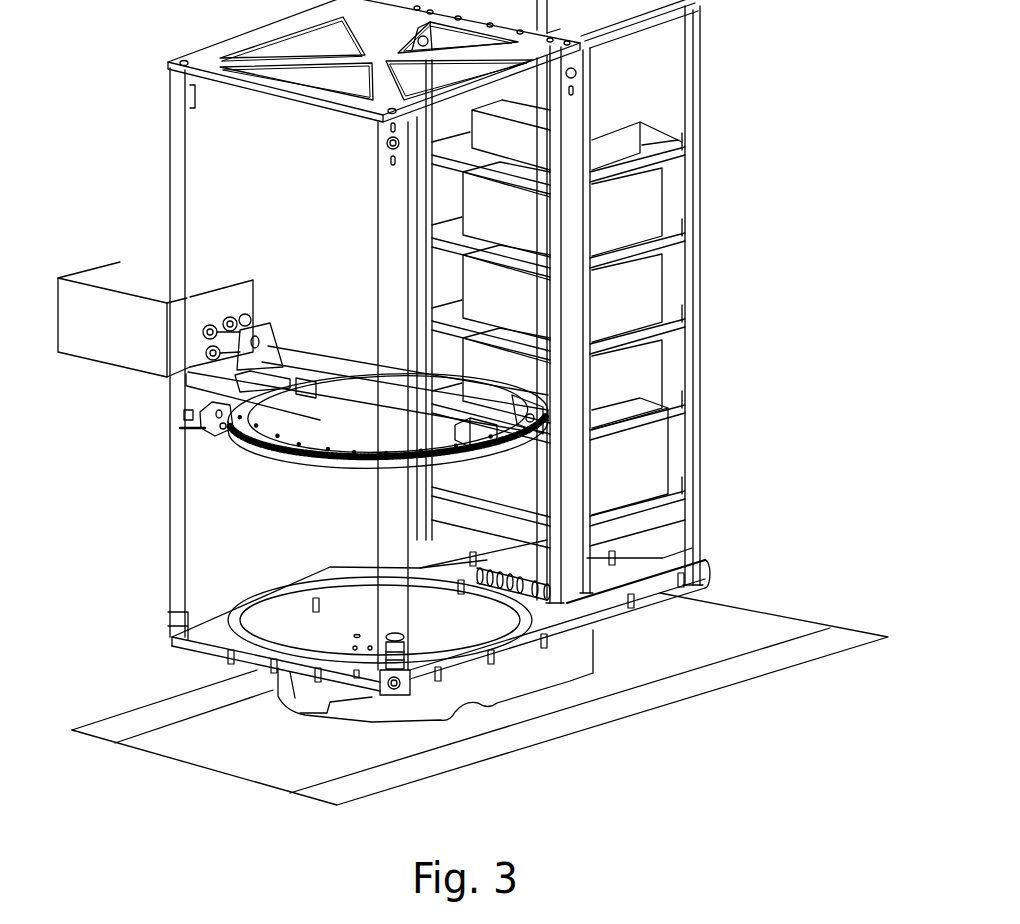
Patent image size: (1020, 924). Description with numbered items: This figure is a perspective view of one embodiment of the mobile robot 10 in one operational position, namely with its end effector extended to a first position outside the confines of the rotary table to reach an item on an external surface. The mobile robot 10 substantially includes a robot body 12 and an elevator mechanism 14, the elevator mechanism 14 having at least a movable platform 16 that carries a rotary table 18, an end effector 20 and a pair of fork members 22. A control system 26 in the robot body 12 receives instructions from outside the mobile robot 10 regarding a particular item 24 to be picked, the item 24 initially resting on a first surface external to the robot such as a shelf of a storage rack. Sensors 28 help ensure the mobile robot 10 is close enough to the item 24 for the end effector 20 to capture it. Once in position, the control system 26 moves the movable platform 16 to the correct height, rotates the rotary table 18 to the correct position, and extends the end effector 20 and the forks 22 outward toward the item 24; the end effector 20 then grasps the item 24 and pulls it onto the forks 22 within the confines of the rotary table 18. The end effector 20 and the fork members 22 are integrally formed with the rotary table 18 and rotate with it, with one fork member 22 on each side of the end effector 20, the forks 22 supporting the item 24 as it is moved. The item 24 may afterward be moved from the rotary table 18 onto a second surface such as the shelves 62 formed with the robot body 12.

The mobile robot 10 is at (780, 424).
The robot body 12 is at (590, 646).
The elevator mechanism 14 is at (165, 528).
The movable platform 16 is at (243, 447).
The rotary table 18 is at (216, 423).
The end effector 20 is at (240, 368).
The fork members 22 is at (302, 357).
The item 24 is at (128, 338).
The control system 26 is at (513, 683).
The sensors 28 is at (383, 652).
The shelves 62 is at (683, 148).